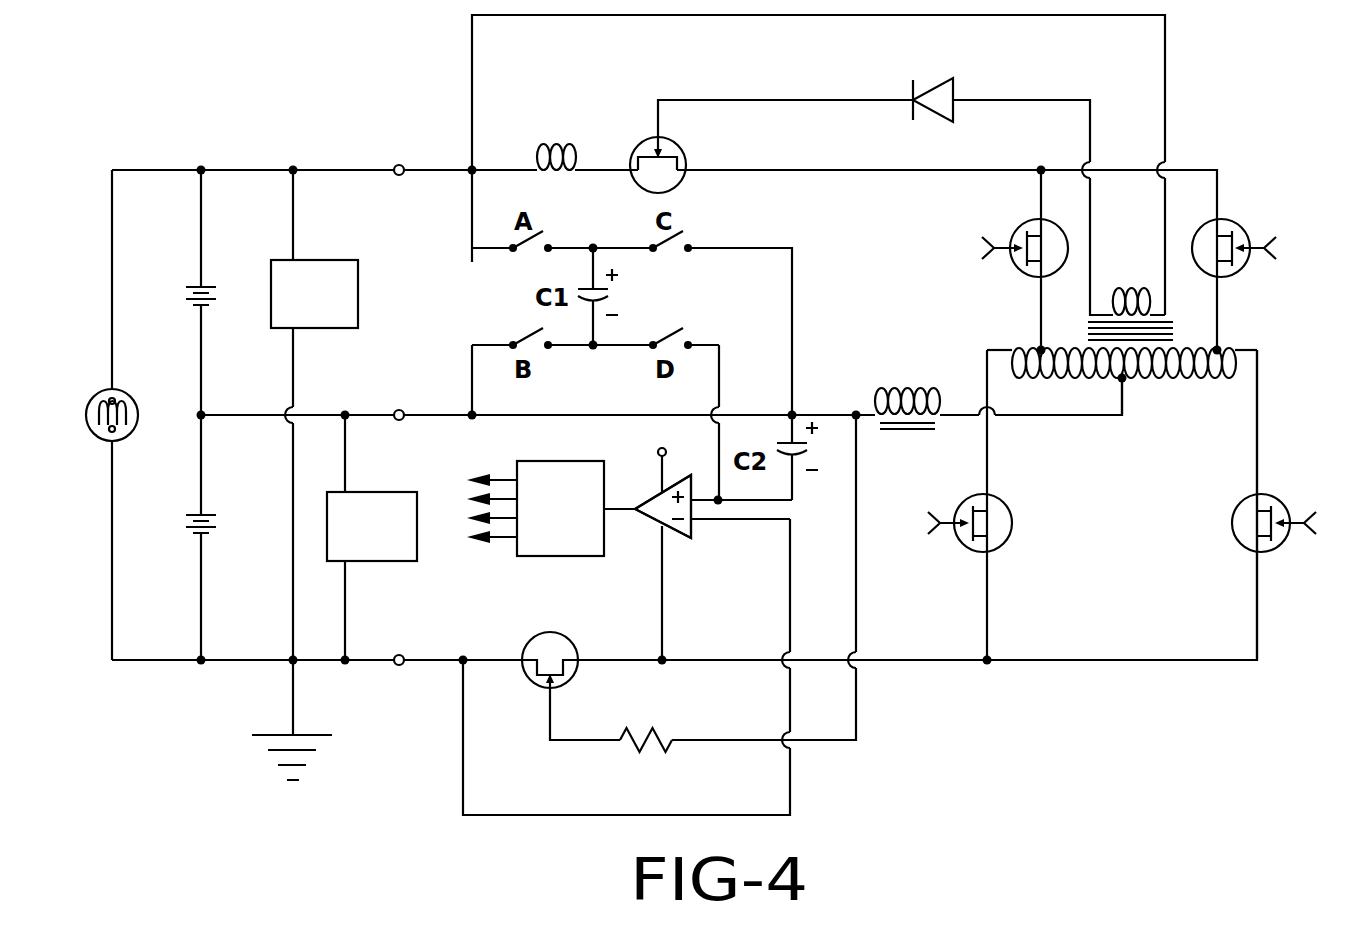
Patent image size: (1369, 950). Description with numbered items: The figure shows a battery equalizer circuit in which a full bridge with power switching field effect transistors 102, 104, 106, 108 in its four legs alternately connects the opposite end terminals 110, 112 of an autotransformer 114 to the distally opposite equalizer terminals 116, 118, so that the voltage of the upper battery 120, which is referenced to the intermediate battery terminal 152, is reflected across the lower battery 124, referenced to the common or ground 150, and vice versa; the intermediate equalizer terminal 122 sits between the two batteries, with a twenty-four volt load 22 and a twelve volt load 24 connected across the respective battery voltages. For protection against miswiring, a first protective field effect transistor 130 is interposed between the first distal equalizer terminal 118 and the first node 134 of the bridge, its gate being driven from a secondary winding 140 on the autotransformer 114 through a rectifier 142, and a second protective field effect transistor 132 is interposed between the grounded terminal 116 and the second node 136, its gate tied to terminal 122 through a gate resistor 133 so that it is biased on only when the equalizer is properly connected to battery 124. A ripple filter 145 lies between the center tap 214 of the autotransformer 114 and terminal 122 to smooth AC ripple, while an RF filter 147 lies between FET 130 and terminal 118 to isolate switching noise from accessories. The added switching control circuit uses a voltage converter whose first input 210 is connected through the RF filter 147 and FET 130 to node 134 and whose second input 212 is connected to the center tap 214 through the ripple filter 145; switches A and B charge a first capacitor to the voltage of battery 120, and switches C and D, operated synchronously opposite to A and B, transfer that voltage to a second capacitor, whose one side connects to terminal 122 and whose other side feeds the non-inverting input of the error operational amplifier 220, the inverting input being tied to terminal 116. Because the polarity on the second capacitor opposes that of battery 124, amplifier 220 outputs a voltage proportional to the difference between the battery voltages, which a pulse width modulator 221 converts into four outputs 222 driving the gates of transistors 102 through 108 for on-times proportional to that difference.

The 24 V load 22 is at (349, 260).
The 12 V load 24 is at (375, 492).
The power switching field effect transistor 102 is at (1228, 222).
The power switching field effect transistor 104 is at (1278, 548).
The power switching field effect transistor 106 is at (997, 548).
The power switching field effect transistor 108 is at (1030, 222).
The end terminal 110 is at (1217, 348).
The end terminal 112 is at (1041, 348).
The autotransformer 114 is at (1205, 380).
The second distal equalizer terminal 116 is at (399, 665).
The first distal equalizer terminal 118 is at (399, 165).
The upper battery 120 is at (190, 290).
The intermediate equalizer terminal 122 is at (399, 410).
The lower battery 124 is at (190, 516).
The first protective field effect transistor 130 is at (678, 145).
The second protective field effect transistor 132 is at (575, 685).
The gate resistor 133 is at (635, 750).
The first node 134 is at (1195, 170).
The second node 136 is at (1050, 660).
The secondary winding 140 is at (1118, 290).
The rectifier 142 is at (948, 80).
The ripple filter 145 is at (895, 390).
The RF filter 147 is at (558, 143).
The common or ground 150 is at (201, 665).
The intermediate battery terminal 152 is at (201, 415).
The voltage converter input 210 is at (472, 262).
The voltage converter input 212 is at (472, 345).
The center tap 214 is at (1122, 380).
The operational amplifier 220 is at (682, 528).
The pulse width modulator 221 is at (540, 556).
The outputs 222 is at (466, 512).